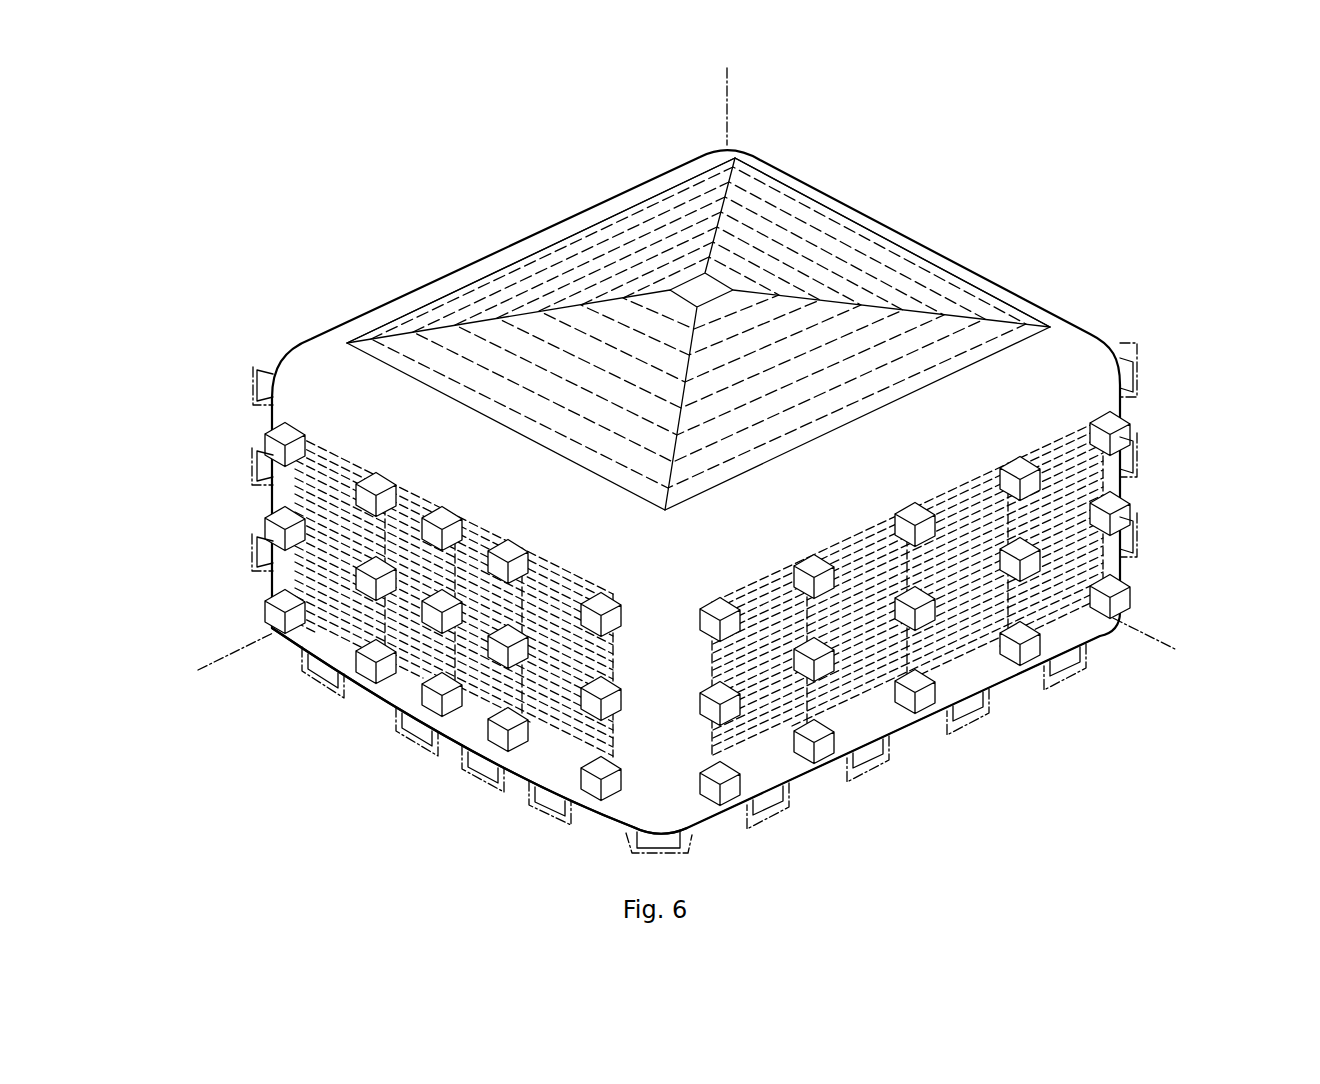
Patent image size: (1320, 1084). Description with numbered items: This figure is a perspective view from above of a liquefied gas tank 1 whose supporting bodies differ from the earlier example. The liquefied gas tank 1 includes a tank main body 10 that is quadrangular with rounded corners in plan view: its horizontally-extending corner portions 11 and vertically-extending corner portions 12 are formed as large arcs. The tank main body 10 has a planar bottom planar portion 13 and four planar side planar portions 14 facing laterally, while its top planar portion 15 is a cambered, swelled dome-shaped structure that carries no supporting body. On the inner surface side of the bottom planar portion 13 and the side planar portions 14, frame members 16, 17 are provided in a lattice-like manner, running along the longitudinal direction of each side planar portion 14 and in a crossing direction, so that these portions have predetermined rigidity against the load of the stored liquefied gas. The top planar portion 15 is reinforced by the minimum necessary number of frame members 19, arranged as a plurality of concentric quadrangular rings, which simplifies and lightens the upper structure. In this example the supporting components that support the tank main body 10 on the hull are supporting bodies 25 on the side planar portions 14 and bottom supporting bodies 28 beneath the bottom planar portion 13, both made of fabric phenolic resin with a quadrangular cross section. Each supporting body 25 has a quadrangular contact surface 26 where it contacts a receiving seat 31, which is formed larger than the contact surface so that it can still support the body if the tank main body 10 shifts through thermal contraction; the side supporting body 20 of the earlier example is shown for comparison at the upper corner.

The liquefied gas tank 1 is at (1021, 184).
The tank main body 10 is at (1049, 297).
The corner portions 11 is at (348, 402).
The corner portions 12 is at (660, 743).
The bottom planar portion 13 is at (813, 777).
The side planar portions 14 is at (481, 671).
The top planar portion 15 is at (601, 244).
The frame members 16 is at (291, 630).
The frame members 17 is at (418, 658).
The frame members 19 is at (778, 225).
The side supporting body 20 is at (256, 390).
The supporting bodies 25 is at (253, 611).
The contact surface 26 is at (273, 530).
The bottom supporting bodies 28 is at (541, 795).
The receiving seat 31 is at (265, 365).